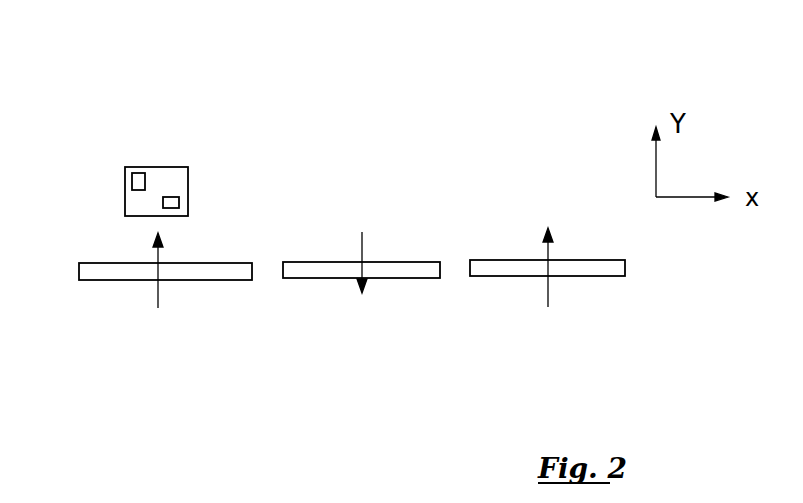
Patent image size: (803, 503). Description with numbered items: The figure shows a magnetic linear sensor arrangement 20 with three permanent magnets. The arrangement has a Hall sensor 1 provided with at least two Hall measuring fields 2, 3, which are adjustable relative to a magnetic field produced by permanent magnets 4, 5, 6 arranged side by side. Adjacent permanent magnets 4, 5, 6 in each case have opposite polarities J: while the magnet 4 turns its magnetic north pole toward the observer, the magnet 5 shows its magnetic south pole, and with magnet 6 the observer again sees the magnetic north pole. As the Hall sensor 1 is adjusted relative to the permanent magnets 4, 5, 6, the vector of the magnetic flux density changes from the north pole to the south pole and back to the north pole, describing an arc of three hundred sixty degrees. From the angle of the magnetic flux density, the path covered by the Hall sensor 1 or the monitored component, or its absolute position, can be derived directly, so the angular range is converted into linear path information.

The magnetic linear sensor arrangement 20 is at (132, 118).
The Hall sensor 1 is at (173, 183).
The Hall measuring field 2 is at (133, 178).
The Hall measuring field 3 is at (179, 203).
The permanent magnet 4 is at (203, 279).
The permanent magnet 5 is at (408, 278).
The permanent magnet 6 is at (578, 233).
The polarity J is at (153, 270).